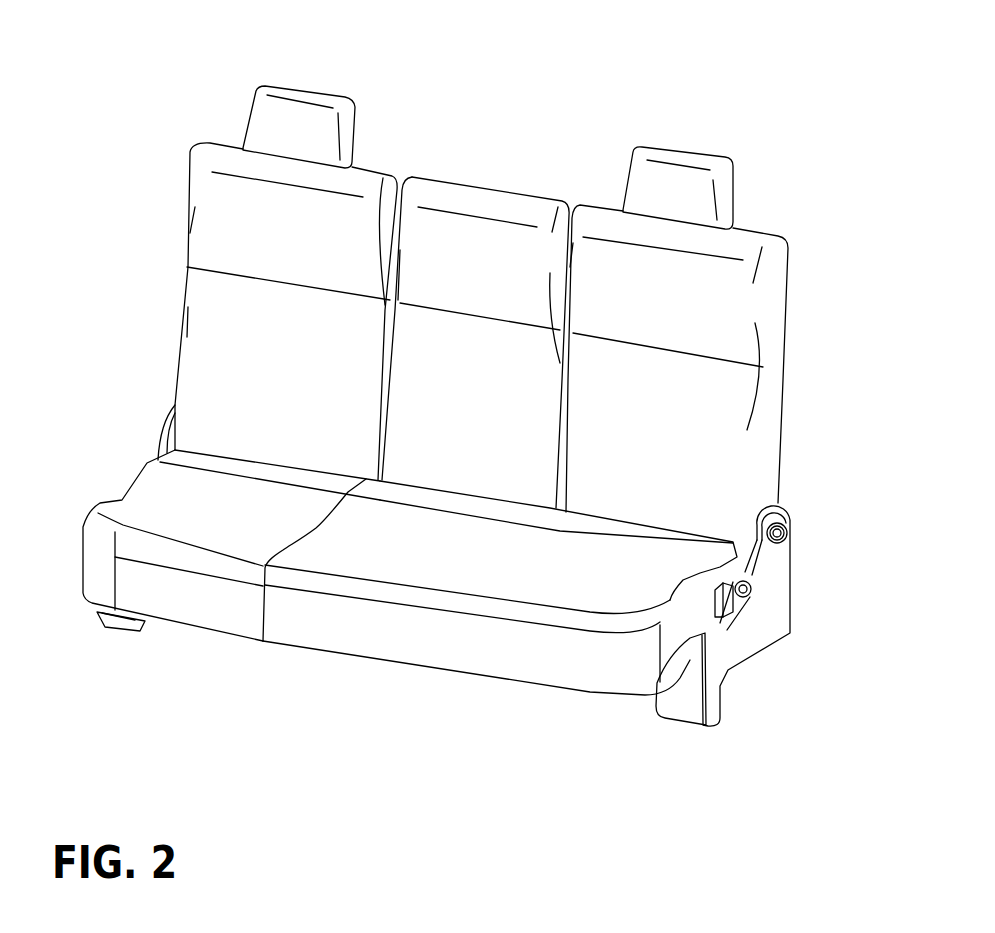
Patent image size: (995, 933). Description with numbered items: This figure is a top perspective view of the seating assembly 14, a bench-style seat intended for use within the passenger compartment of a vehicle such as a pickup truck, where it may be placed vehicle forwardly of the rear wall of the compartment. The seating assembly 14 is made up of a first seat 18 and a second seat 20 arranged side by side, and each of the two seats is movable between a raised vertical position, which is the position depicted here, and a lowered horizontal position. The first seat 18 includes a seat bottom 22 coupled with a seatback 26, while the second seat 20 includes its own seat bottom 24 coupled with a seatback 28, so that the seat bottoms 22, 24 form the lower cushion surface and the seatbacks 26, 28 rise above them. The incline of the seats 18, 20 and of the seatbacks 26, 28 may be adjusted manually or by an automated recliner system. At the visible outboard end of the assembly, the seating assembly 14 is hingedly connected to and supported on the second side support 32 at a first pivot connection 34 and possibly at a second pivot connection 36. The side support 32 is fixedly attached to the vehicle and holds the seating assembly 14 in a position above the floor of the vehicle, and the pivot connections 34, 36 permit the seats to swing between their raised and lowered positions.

The seating assembly 14 is at (583, 114).
The first seat 18 is at (221, 320).
The second seat 20 is at (711, 333).
The seat bottom 22 is at (138, 498).
The seat bottom 24 is at (620, 553).
The seatback 26 is at (223, 200).
The seatback 28 is at (723, 302).
The second side support 32 is at (110, 627).
The first pivot connection 34 is at (789, 534).
The second pivot connection 36 is at (753, 597).